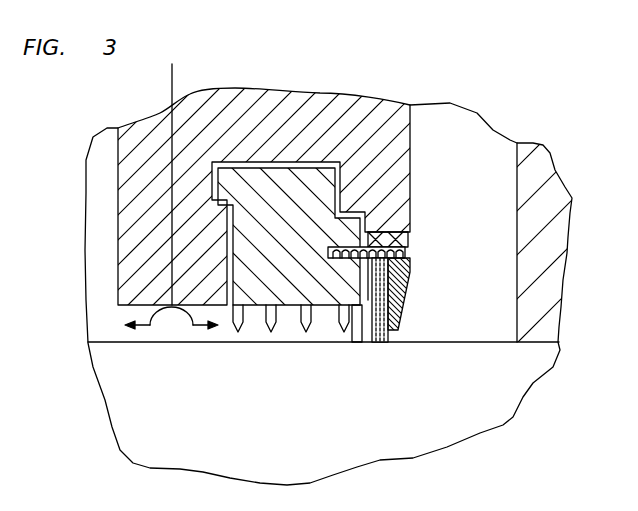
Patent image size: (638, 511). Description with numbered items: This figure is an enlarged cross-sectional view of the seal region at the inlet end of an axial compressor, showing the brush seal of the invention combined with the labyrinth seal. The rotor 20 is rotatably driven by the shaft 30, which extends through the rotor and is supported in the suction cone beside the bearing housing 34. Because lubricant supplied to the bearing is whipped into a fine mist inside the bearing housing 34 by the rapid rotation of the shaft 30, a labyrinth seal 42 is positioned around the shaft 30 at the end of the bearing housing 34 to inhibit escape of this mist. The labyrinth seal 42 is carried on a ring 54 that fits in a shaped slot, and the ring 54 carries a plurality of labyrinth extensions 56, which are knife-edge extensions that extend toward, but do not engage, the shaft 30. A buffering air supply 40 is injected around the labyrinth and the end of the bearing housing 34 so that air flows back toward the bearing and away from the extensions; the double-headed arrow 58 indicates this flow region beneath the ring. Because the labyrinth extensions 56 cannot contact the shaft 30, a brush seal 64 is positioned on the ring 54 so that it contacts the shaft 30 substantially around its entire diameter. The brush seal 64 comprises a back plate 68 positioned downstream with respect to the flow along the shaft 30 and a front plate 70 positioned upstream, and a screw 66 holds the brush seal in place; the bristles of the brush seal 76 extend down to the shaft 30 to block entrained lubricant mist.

The rotor 20 is at (516, 190).
The shaft 30 is at (502, 340).
The bearing housing 34 is at (117, 177).
The buffering air supply 40 is at (176, 81).
The labyrinth seal 42 is at (216, 303).
The ring 54 is at (264, 203).
The labyrinth extensions 56 is at (269, 334).
The spacing 58 is at (193, 325).
The brush seal 64 is at (432, 264).
The screw 66 is at (398, 233).
The back plate 68 is at (410, 300).
The front plate 70 is at (355, 344).
The brush seal 76 is at (388, 340).